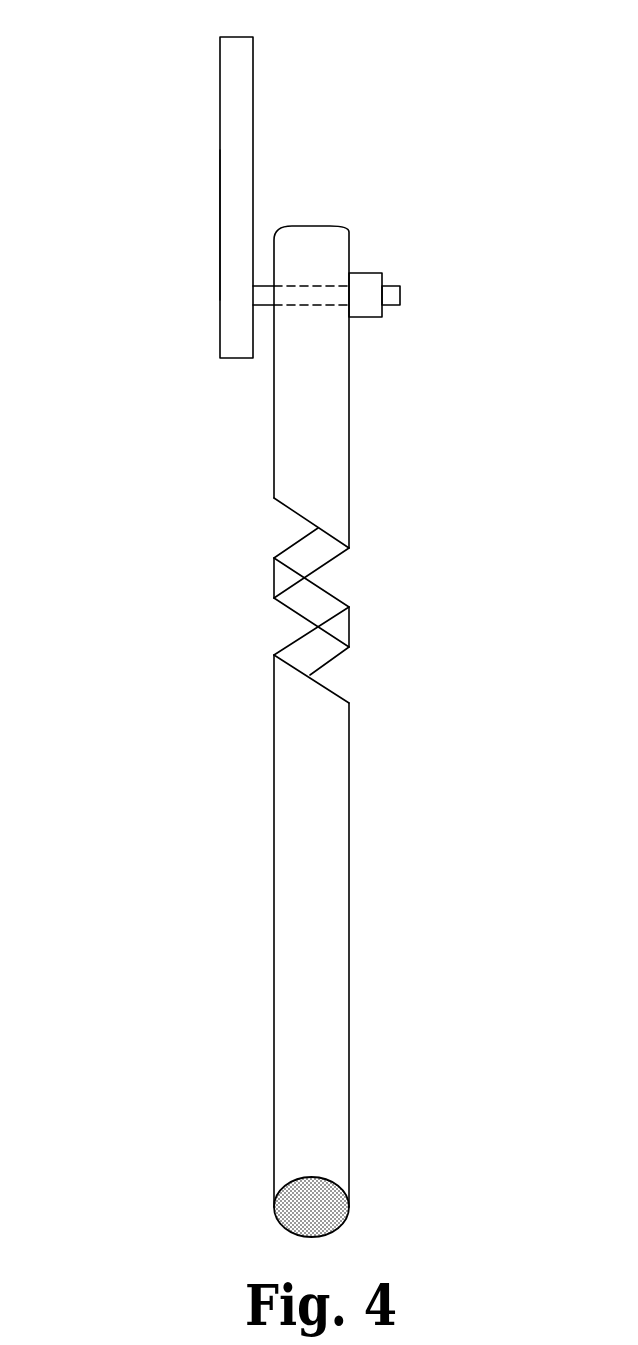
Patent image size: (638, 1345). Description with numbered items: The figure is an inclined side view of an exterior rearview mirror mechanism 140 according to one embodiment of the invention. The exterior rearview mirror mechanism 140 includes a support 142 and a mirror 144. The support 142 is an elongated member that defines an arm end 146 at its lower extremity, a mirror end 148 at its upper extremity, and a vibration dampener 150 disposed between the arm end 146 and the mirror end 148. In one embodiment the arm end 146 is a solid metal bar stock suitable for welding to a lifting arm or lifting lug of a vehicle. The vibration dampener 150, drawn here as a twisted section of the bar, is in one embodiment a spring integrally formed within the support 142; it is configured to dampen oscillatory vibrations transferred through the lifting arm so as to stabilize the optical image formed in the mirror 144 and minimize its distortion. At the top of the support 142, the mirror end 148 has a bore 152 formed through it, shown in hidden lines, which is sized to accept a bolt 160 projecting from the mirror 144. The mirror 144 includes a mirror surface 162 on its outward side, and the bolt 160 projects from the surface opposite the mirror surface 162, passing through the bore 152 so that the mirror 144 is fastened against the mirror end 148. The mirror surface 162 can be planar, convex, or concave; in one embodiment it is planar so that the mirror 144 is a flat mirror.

The exterior rearview mirror mechanism 140 is at (176, 732).
The support 142 is at (350, 906).
The mirror 144 is at (237, 67).
The arm end 146 is at (350, 1193).
The mirror end 148 is at (349, 232).
The vibration dampener 150 is at (432, 609).
The bore 152 is at (307, 307).
The bolt 160 is at (400, 296).
The mirror surface 162 is at (219, 218).